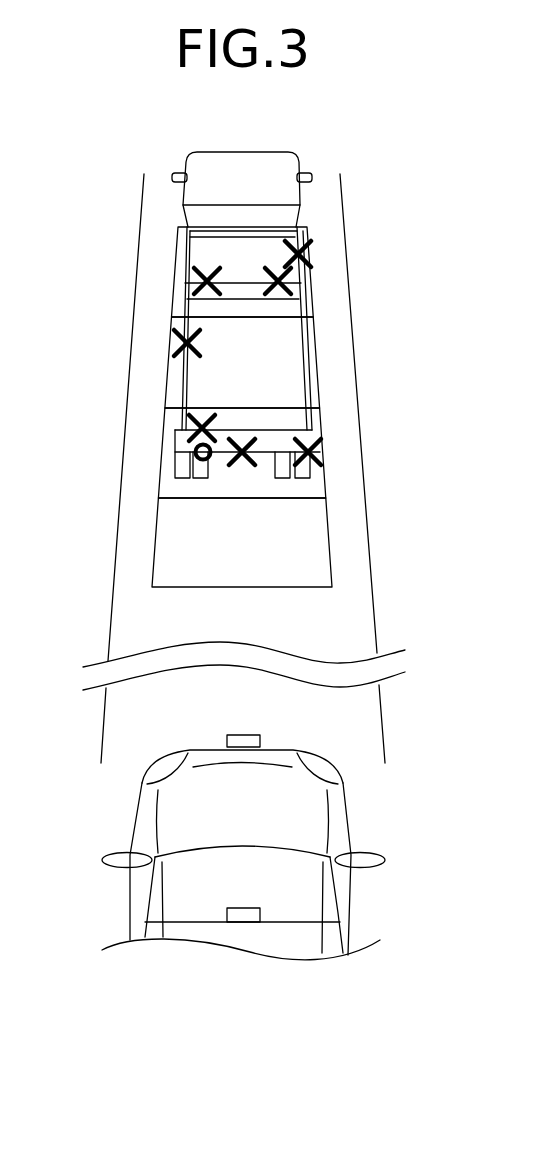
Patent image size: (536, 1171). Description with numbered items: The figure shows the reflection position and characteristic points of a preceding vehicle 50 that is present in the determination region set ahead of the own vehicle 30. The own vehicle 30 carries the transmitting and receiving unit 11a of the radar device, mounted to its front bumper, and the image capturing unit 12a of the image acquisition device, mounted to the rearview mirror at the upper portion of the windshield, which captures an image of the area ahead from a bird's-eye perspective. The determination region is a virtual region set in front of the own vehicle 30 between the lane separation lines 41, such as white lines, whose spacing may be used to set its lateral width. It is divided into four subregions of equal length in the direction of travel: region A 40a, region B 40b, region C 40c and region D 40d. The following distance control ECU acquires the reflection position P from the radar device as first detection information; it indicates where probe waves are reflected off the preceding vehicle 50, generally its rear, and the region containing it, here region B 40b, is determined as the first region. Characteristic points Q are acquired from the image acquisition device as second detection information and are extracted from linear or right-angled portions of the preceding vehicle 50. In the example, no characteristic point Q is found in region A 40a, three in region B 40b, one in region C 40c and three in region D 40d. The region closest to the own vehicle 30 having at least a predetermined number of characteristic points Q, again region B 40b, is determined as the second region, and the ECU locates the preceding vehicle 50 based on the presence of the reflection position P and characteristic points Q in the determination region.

The preceding vehicle 50 is at (268, 152).
The lane separation lines 41 is at (140, 207).
The region A 40a is at (330, 540).
The region B 40b is at (327, 478).
The region C 40c is at (315, 358).
The region D 40d is at (312, 292).
The characteristic points Q is at (200, 426).
The reflection position P is at (195, 448).
The own vehicle 30 is at (353, 820).
The transmitting and receiving unit 11a is at (260, 745).
The image capturing unit 12a is at (243, 908).